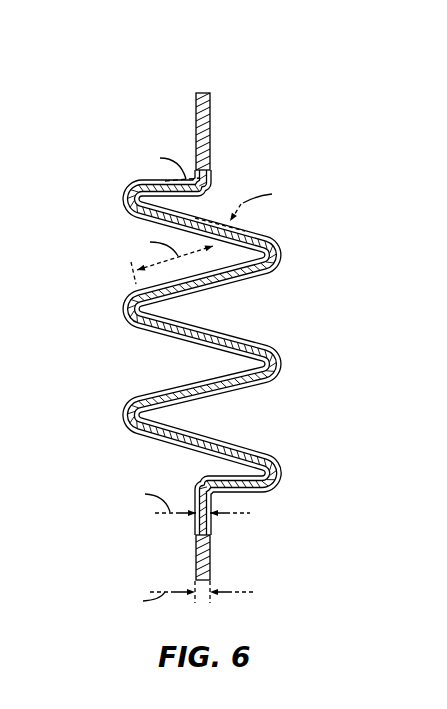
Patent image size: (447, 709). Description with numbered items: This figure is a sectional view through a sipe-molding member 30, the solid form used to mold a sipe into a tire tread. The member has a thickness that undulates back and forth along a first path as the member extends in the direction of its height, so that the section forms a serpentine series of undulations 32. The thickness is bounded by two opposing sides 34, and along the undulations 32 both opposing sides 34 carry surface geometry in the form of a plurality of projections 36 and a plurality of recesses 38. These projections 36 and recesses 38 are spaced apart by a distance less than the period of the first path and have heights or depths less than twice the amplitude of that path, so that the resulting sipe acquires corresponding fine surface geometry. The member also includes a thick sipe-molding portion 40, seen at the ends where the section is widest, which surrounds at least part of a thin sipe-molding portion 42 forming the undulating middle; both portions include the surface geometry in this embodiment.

The sipe-molding member 30 is at (148, 48).
The undulations 32 is at (125, 199).
The opposing sides 34 is at (217, 336).
The projections 36 is at (210, 376).
The recesses 38 is at (224, 385).
The thick sipe-molding portion 40 is at (210, 152).
The thin sipe-molding portion 42 is at (282, 258).